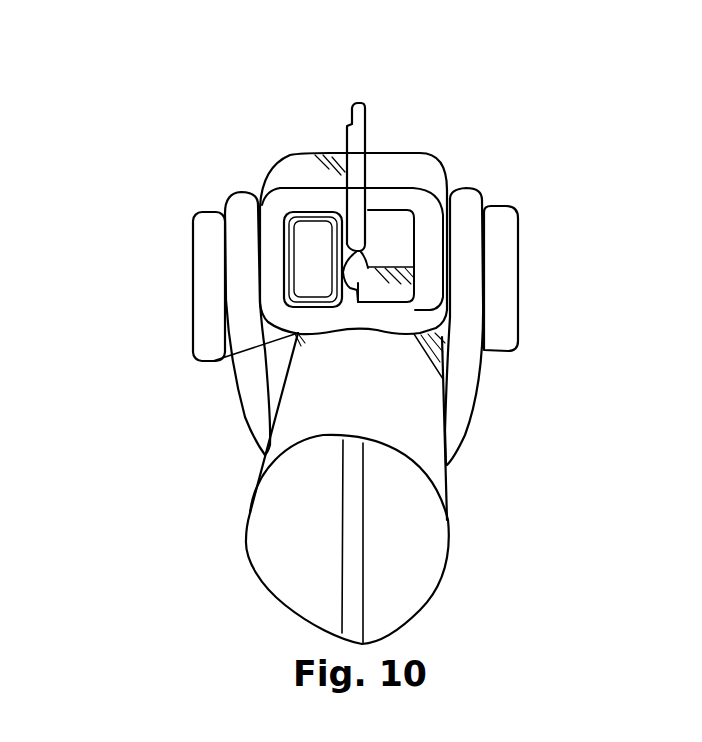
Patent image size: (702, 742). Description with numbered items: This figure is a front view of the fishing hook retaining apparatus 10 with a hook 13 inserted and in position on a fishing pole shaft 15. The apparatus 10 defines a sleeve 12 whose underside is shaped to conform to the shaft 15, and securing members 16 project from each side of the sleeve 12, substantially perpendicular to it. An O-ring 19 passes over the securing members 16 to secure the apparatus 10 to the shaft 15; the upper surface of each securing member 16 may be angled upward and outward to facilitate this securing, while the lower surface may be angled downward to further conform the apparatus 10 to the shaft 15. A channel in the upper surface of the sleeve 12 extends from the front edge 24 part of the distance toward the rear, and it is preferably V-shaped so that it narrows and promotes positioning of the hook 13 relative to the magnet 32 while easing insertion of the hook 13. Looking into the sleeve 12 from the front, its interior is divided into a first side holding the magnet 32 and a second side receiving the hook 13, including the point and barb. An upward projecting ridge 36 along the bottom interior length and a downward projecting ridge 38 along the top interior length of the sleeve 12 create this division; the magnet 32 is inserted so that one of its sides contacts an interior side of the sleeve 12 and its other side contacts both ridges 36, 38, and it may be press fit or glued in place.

The fishing hook retaining apparatus 10 is at (291, 69).
The sleeve 12 is at (414, 162).
The hook 13 is at (358, 138).
The fishing pole shaft 15 is at (421, 437).
The securing members 16 is at (193, 284).
The O-ring 19 is at (466, 362).
The front edge 24 is at (313, 195).
The magnet 32 is at (311, 262).
The upward projecting ridge 36 is at (357, 294).
The downward projecting ridge 38 is at (338, 211).